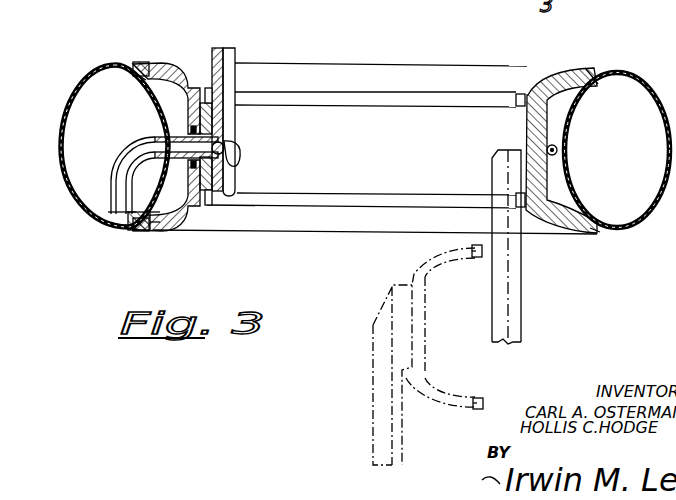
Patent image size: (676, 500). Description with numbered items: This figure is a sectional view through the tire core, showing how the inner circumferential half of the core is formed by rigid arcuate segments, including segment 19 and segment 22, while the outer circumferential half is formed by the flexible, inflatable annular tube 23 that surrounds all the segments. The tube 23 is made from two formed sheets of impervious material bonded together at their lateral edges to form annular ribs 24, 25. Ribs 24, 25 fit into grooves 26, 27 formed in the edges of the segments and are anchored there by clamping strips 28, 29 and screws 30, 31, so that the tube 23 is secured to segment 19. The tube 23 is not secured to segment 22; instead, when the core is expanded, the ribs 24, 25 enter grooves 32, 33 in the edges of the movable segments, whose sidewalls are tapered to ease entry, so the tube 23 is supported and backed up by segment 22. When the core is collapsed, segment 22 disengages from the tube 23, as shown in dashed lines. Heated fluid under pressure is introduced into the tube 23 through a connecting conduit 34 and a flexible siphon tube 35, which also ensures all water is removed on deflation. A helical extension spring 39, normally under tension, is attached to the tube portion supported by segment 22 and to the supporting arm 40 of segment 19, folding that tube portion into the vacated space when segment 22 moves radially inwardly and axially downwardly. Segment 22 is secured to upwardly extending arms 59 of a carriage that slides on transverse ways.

The arcuate segment 19 is at (217, 60).
The arcuate segment 22 is at (442, 395).
The inflatable annular tube 23 is at (66, 106).
The annular rib 24 is at (135, 72).
The annular rib 25 is at (128, 231).
The groove 26 is at (138, 63).
The groove 27 is at (140, 230).
The clamping strip 28 is at (155, 84).
The clamping strip 29 is at (153, 226).
The screw 30 is at (150, 64).
The screw 31 is at (152, 210).
The groove 32 is at (597, 68).
The groove 33 is at (597, 220).
The connecting conduit 34 is at (232, 148).
The flexible siphon tube 35 is at (110, 212).
The helical extension spring 39 is at (530, 150).
The supporting arm 40 is at (233, 56).
The upwardly extending arm 59 is at (374, 430).